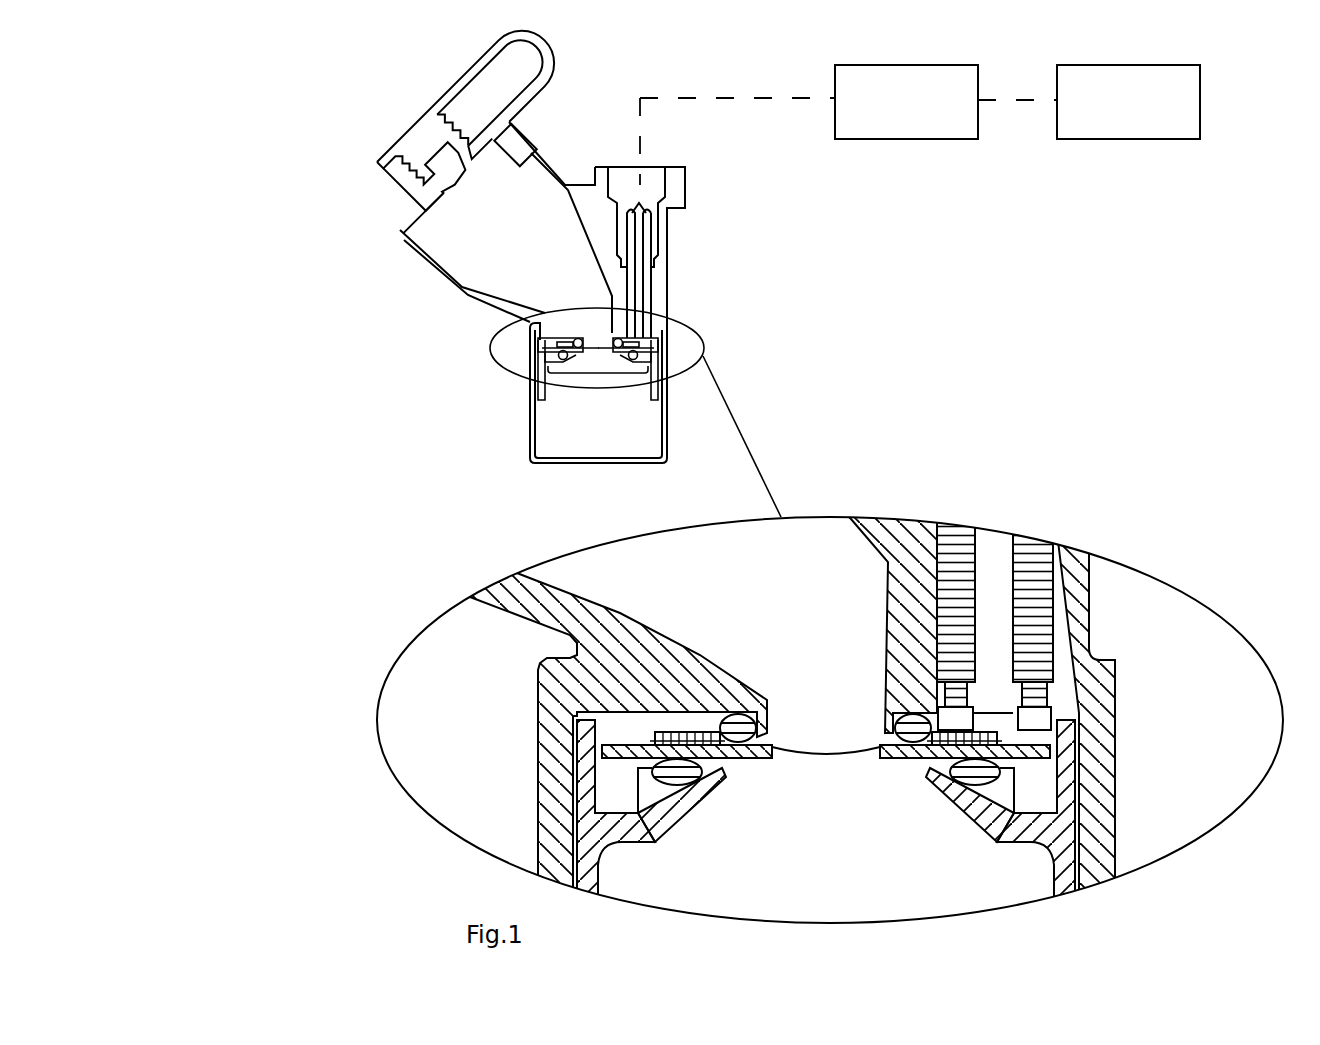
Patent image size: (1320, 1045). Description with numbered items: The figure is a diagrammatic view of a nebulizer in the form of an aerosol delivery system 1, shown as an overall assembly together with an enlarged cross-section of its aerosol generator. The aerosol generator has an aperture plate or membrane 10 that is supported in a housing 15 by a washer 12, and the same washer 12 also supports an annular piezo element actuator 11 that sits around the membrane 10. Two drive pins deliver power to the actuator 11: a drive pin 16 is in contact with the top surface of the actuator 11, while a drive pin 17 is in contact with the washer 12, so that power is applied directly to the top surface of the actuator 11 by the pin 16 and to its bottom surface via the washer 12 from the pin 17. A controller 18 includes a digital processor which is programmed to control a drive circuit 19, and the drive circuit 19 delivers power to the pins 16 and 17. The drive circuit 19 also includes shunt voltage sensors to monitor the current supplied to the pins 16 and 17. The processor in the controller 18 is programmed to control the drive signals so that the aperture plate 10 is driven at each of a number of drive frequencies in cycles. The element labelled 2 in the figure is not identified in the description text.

The aerosol delivery system 1 is at (305, 248).
The strap 2 is at (497, 307).
The aperture plate or membrane 10 is at (807, 747).
The annular piezo element actuator 11 is at (683, 732).
The washer 12 is at (893, 760).
The housing 15 is at (695, 800).
The drive pin 16 is at (957, 527).
The drive pin 17 is at (1030, 548).
The controller 18 is at (1200, 123).
The drive circuit 19 is at (898, 140).